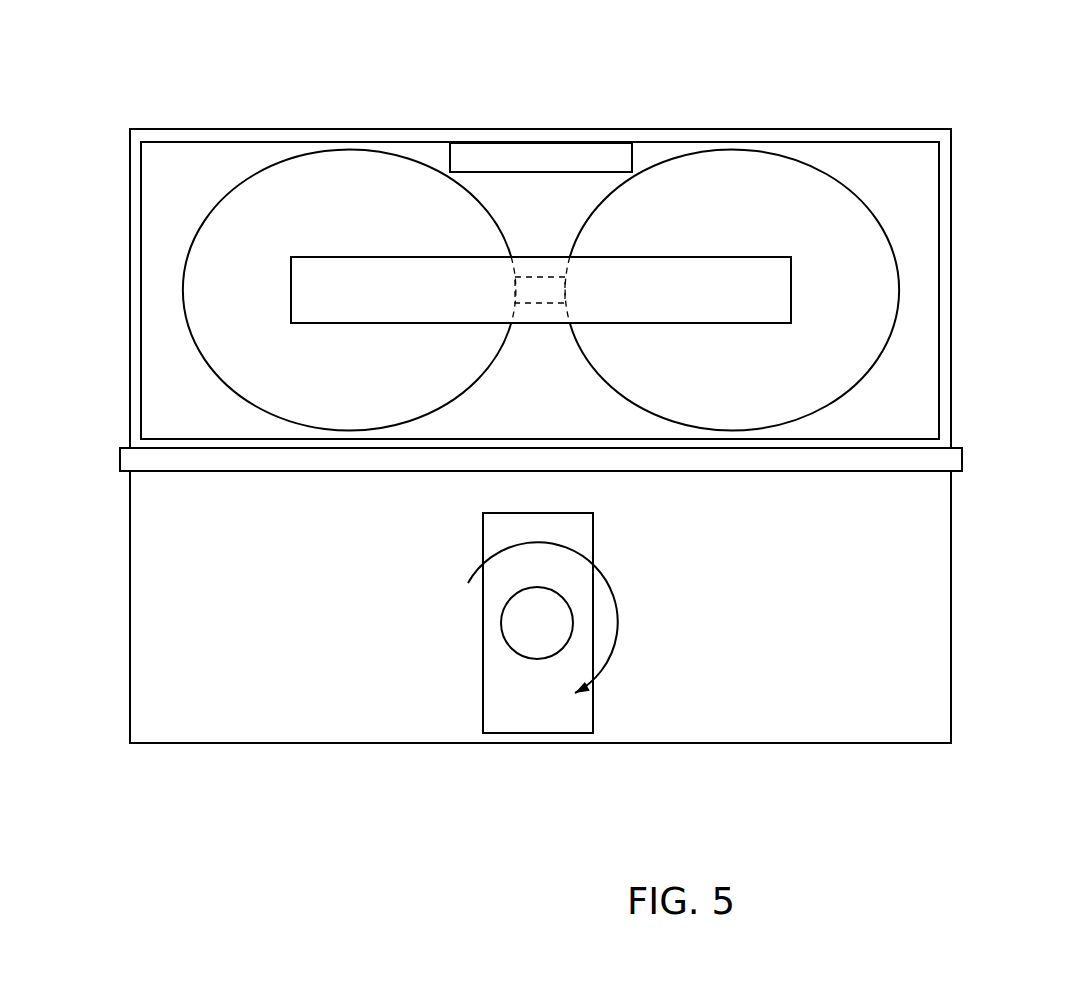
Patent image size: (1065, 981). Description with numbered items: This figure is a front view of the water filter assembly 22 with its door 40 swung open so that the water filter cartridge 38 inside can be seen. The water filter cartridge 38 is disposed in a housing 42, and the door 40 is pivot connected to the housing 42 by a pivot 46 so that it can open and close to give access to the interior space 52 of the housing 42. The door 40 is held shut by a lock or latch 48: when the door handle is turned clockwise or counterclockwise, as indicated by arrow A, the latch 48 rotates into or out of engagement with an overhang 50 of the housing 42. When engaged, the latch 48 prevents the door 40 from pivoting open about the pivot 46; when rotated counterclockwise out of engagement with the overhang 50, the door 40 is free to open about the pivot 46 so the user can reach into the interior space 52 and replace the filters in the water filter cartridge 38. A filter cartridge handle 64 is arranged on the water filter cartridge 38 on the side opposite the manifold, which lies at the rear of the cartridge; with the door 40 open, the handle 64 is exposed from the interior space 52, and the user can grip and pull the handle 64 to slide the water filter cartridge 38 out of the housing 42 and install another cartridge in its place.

The water filter assembly 22 is at (818, 88).
The water filter cartridge 38 is at (899, 291).
The door 40 is at (940, 609).
The housing 42 is at (953, 186).
The pivot 46 is at (962, 458).
The latch 48 is at (533, 722).
The overhang 50 is at (527, 148).
The interior space 52 is at (155, 164).
The filter cartridge handle 64 is at (722, 313).
The arrow A is at (617, 620).